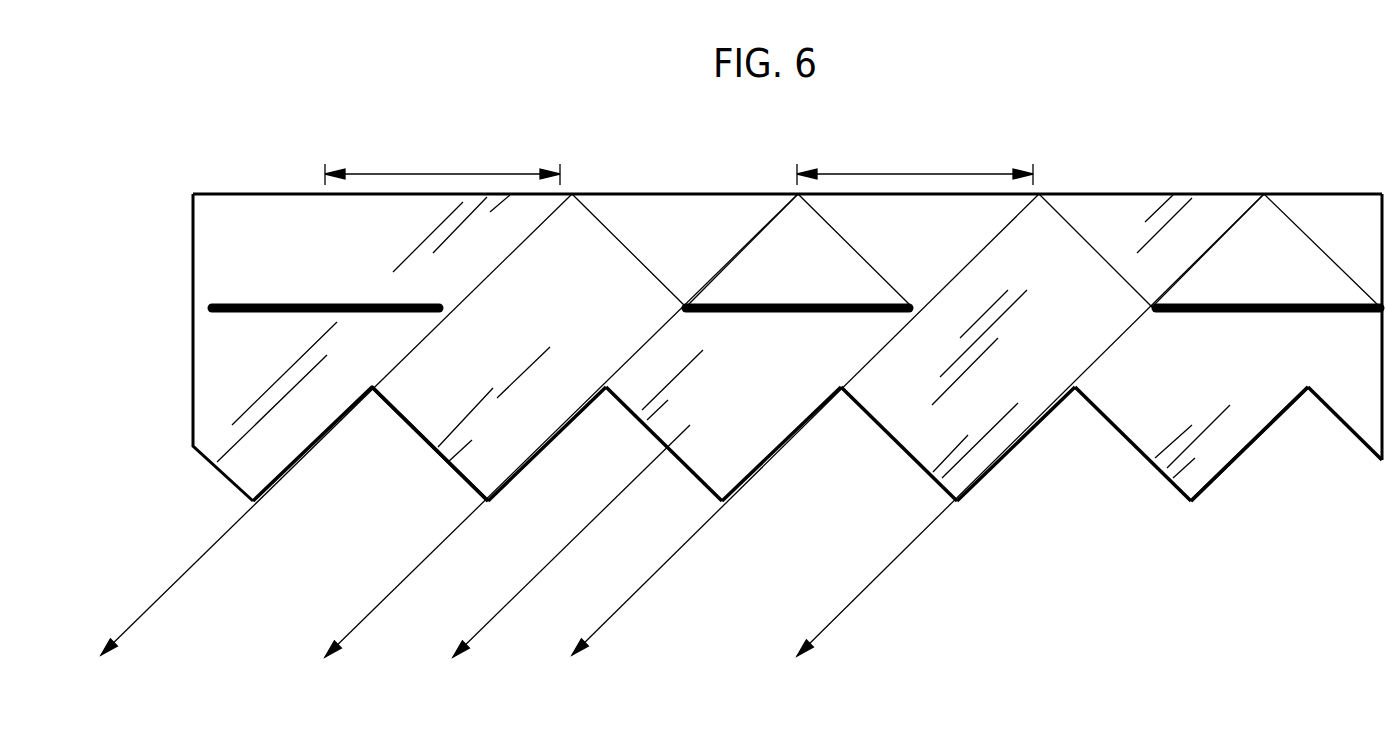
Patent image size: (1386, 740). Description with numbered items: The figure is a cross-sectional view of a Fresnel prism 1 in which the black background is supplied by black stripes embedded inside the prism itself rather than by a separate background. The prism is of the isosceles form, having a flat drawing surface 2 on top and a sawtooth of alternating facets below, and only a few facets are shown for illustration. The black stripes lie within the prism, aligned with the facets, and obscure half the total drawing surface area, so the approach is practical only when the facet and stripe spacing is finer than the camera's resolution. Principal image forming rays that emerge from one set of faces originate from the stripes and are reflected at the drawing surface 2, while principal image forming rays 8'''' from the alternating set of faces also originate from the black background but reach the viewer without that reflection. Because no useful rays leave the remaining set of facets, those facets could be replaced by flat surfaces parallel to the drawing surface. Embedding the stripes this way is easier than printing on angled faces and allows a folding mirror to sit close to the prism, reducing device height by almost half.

The Fresnel prism 1 is at (259, 212).
The drawing surface 2 is at (787, 168).
The principal image forming rays 8'''' is at (571, 541).